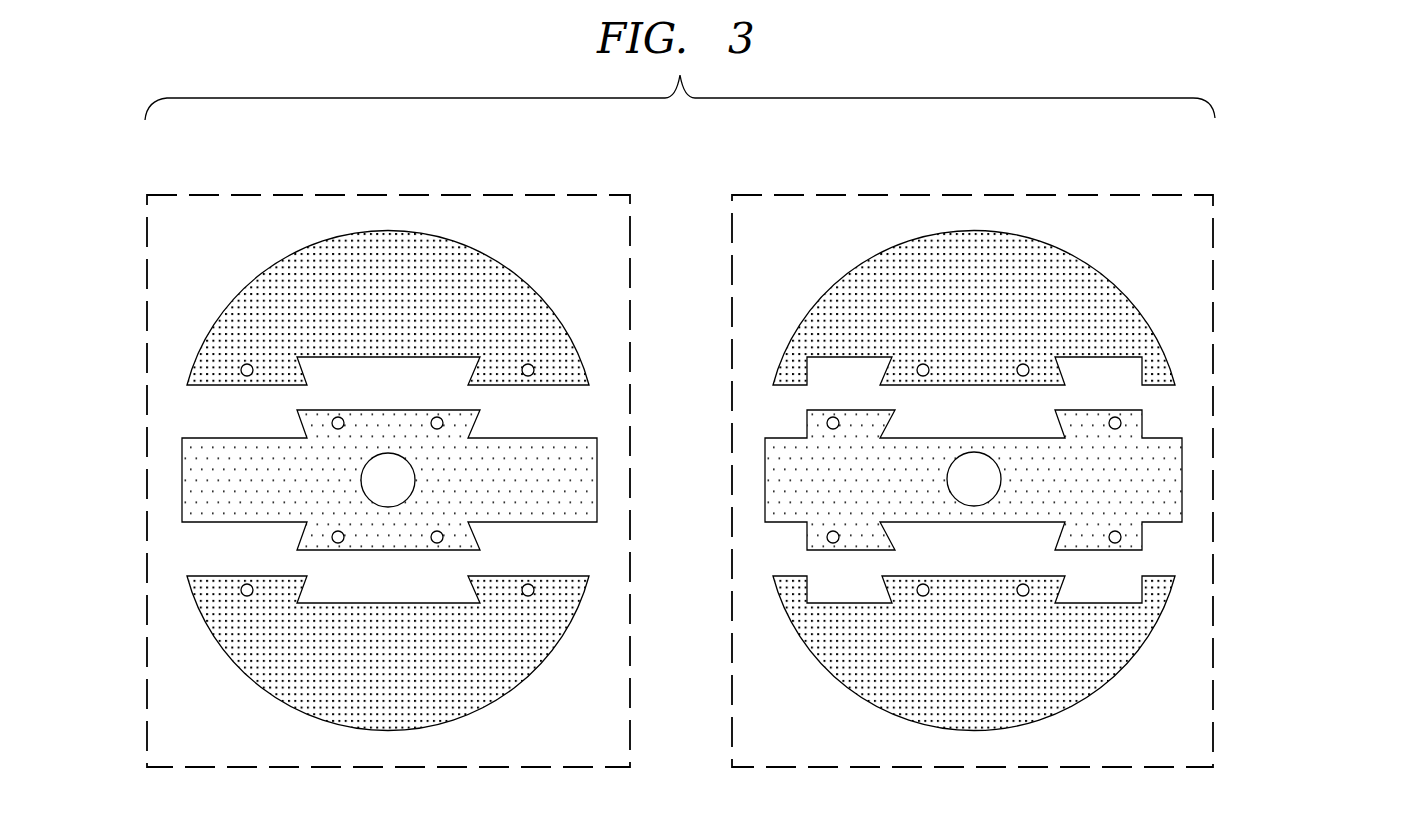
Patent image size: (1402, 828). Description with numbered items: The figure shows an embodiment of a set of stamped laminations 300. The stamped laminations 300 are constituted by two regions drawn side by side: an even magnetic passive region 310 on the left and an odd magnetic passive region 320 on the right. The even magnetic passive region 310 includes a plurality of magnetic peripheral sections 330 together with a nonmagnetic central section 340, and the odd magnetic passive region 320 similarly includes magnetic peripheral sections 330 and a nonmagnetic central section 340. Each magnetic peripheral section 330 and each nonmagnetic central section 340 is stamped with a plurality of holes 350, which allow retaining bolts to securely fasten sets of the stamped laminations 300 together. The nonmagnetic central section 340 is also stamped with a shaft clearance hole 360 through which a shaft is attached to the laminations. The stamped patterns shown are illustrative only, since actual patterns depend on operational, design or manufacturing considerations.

The set of stamped laminations 300 is at (1328, 218).
The even magnetic passive region 310 is at (388, 193).
The odd magnetic passive region 320 is at (974, 193).
The magnetic peripheral sections 330 is at (527, 286).
The nonmagnetic central section 340 is at (182, 480).
The holes 350 is at (332, 423).
The shaft clearance hole 360 is at (388, 453).